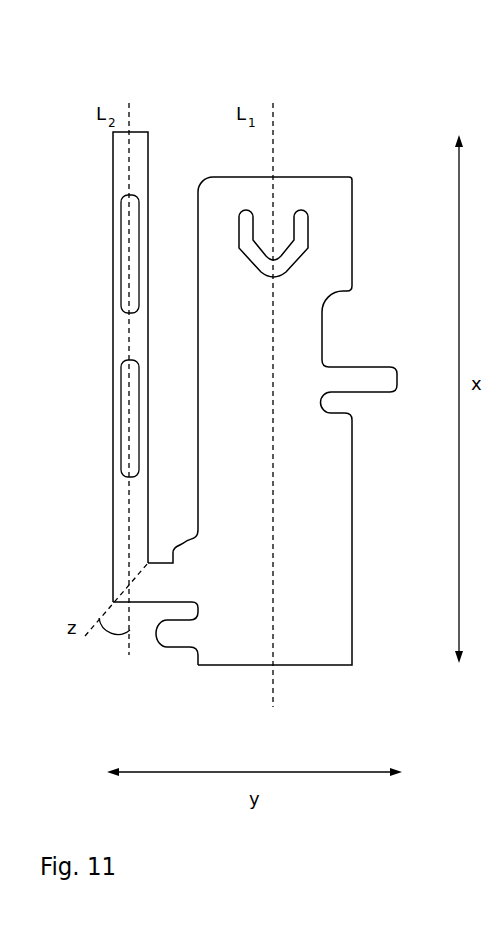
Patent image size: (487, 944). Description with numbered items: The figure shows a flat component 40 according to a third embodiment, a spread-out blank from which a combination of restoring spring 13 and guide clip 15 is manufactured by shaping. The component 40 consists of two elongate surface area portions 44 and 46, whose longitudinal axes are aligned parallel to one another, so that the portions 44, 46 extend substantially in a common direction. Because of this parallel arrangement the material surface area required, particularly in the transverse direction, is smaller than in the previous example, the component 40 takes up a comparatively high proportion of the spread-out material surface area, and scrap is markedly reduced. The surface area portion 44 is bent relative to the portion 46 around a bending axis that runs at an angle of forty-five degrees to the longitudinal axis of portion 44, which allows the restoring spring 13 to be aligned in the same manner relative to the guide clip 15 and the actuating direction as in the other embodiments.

The restoring spring 13 is at (153, 101).
The flat component 40 is at (401, 98).
The guide clip 15 is at (381, 243).
The surface area portion 44 is at (123, 558).
The surface area portion 46 is at (245, 615).